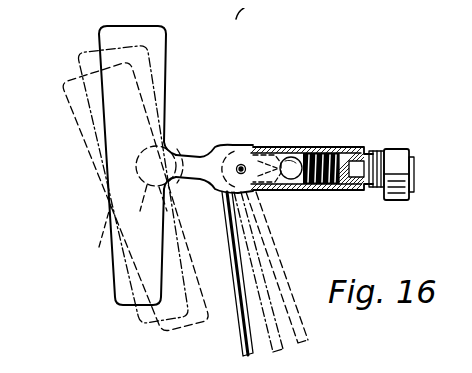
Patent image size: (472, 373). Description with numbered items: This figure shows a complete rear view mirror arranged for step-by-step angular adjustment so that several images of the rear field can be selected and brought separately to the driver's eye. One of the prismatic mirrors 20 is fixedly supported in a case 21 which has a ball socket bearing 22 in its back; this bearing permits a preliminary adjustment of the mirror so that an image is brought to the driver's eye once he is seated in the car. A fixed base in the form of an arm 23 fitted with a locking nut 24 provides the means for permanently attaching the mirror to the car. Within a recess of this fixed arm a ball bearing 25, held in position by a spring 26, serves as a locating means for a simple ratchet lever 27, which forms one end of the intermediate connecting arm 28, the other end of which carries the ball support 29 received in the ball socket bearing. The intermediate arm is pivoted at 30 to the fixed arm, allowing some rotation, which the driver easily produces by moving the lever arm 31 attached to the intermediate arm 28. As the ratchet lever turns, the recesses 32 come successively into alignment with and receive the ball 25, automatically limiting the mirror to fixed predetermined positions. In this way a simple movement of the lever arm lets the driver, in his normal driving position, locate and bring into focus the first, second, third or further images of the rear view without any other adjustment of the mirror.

The prismatic mirror 20 is at (103, 117).
The case 21 is at (167, 60).
The ball socket bearing 22 is at (163, 150).
The arm 23 is at (353, 148).
The locking nut 24 is at (391, 152).
The ball bearing 25 is at (301, 190).
The spring 26 is at (331, 192).
The ratchet lever 27 is at (262, 170).
The intermediate connecting arm 28 is at (209, 152).
The ball support 29 is at (92, 240).
The pivot 30 is at (241, 163).
The lever arm 31 is at (242, 308).
The recesses 32 is at (284, 191).